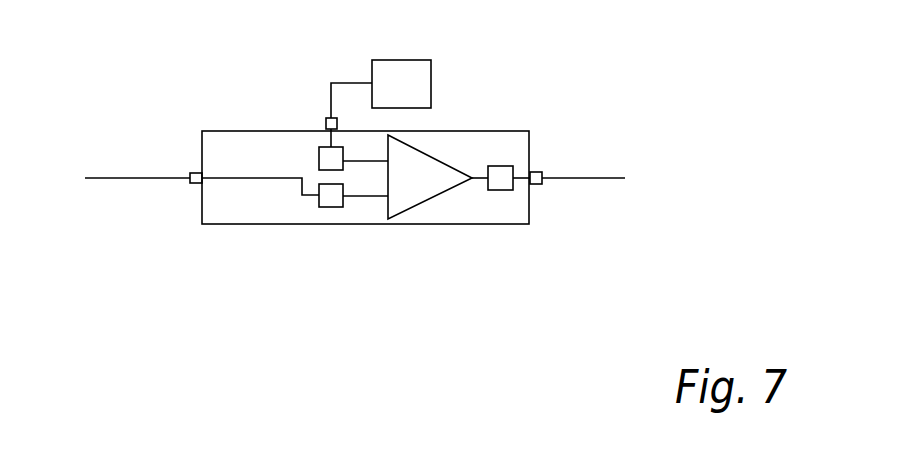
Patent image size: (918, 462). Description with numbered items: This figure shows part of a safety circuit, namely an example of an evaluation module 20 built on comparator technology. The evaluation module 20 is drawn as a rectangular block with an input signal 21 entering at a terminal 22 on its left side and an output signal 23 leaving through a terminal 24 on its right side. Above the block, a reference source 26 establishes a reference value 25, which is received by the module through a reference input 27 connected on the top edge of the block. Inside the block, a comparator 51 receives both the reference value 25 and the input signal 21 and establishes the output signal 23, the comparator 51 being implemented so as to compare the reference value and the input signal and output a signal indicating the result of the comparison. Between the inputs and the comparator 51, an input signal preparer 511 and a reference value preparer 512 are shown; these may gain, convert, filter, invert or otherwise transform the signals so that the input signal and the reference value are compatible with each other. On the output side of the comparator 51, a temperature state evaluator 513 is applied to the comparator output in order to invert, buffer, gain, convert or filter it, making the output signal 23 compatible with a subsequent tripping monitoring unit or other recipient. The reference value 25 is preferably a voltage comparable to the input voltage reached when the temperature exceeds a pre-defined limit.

The evaluation module 20 is at (256, 219).
The input signal 21 is at (125, 177).
The input terminal 22 is at (192, 173).
The output signal 23 is at (578, 178).
The output terminal 24 is at (533, 172).
The reference value 25 is at (330, 100).
The reference source 26 is at (421, 101).
The reference input 27 is at (326, 120).
The comparator 51 is at (427, 190).
The input signal preparer 511 is at (323, 207).
The reference value preparer 512 is at (343, 170).
The temperature state evaluator 513 is at (508, 190).